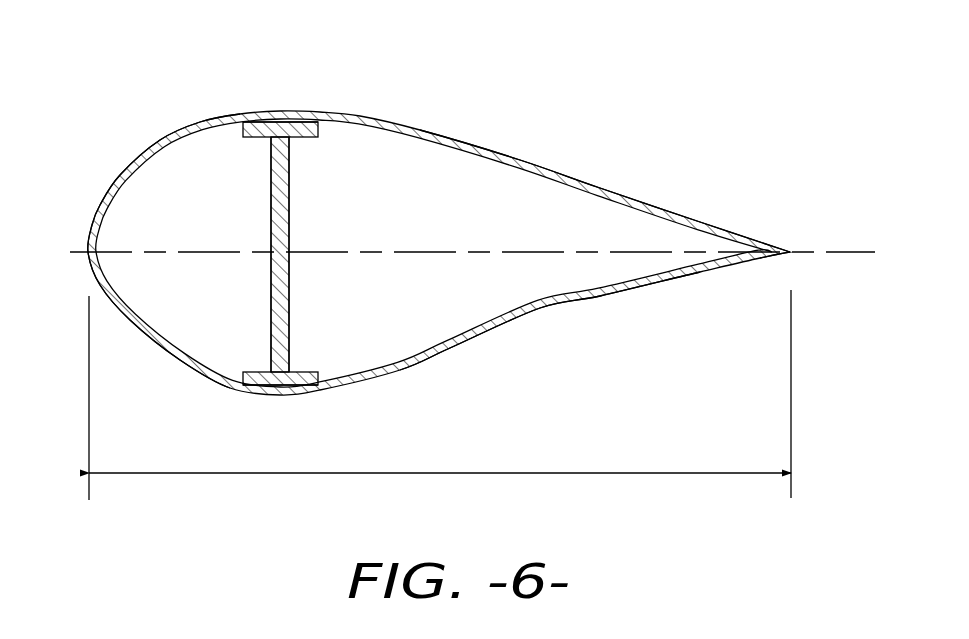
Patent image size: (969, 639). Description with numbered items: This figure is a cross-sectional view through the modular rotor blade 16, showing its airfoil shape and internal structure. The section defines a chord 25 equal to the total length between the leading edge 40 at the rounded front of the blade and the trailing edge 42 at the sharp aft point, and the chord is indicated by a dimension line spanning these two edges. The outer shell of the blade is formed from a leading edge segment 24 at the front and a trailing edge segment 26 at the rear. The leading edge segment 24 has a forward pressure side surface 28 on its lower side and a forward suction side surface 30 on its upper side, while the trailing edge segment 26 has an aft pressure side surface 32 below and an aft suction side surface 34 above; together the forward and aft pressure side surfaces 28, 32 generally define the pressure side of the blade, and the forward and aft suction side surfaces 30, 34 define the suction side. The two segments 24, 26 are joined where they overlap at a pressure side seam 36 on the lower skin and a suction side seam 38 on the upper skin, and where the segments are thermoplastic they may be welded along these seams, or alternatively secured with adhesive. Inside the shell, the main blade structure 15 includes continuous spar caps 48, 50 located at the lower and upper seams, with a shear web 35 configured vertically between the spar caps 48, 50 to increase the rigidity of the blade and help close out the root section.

The rotor blade 16 is at (712, 42).
The main blade structure 15 is at (268, 333).
The leading edge segment 24 is at (111, 177).
The chord 25 is at (558, 473).
The trailing edge segment 26 is at (630, 190).
The forward pressure side surface 28 is at (167, 367).
The forward suction side surface 30 is at (172, 133).
The aft pressure side surface 32 is at (503, 328).
The aft suction side surface 34 is at (507, 141).
The shear web 35 is at (270, 225).
The pressure side seam 36 is at (273, 395).
The suction side seam 38 is at (292, 118).
The leading edge 40 is at (86, 250).
The trailing edge 42 is at (793, 253).
The spar cap 48 is at (298, 370).
The spar cap 50 is at (298, 138).